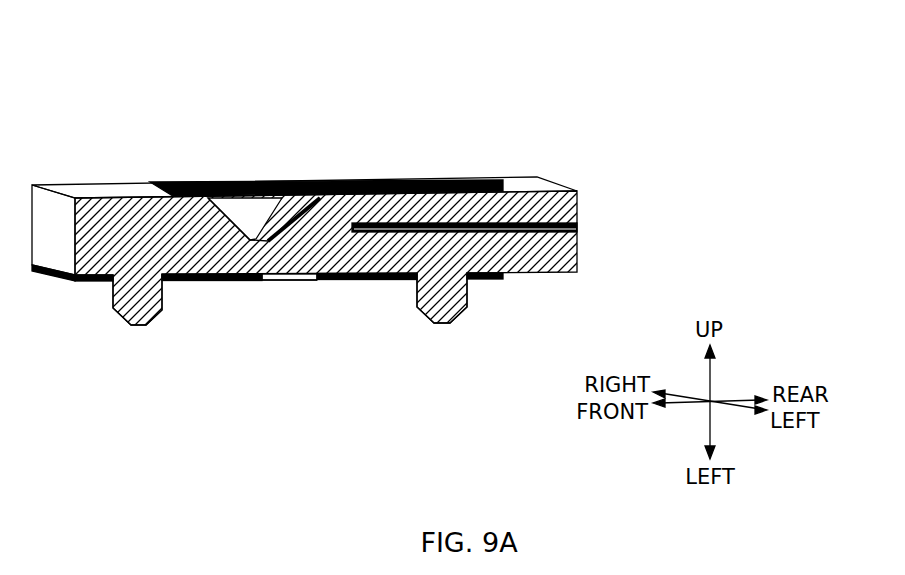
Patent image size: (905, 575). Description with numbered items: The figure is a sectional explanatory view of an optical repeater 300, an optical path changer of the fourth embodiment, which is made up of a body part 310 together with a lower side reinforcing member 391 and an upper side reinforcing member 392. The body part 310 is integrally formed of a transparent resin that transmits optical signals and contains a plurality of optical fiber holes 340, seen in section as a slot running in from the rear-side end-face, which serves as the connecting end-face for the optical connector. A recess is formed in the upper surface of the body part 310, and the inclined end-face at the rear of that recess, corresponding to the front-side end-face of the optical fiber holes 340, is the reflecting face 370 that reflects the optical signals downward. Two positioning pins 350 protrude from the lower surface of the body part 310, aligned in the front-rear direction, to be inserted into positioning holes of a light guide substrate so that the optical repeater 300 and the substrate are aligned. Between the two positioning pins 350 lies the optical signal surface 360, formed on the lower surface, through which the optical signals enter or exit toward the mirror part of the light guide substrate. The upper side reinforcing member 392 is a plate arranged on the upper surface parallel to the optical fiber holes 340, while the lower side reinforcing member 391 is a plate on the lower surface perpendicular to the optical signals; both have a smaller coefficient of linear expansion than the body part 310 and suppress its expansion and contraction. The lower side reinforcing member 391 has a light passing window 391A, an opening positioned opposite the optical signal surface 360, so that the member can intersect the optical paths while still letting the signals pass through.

The optical repeater 300 is at (514, 96).
The body part 310 is at (73, 185).
The optical fiber holes 340 is at (522, 228).
The positioning pins 350 is at (153, 311).
The optical signal surface 360 is at (287, 282).
The reflecting face 370 is at (292, 214).
The lower side reinforcing member 391 is at (217, 282).
The light passing window 391A is at (270, 294).
The upper side reinforcing member 392 is at (217, 181).